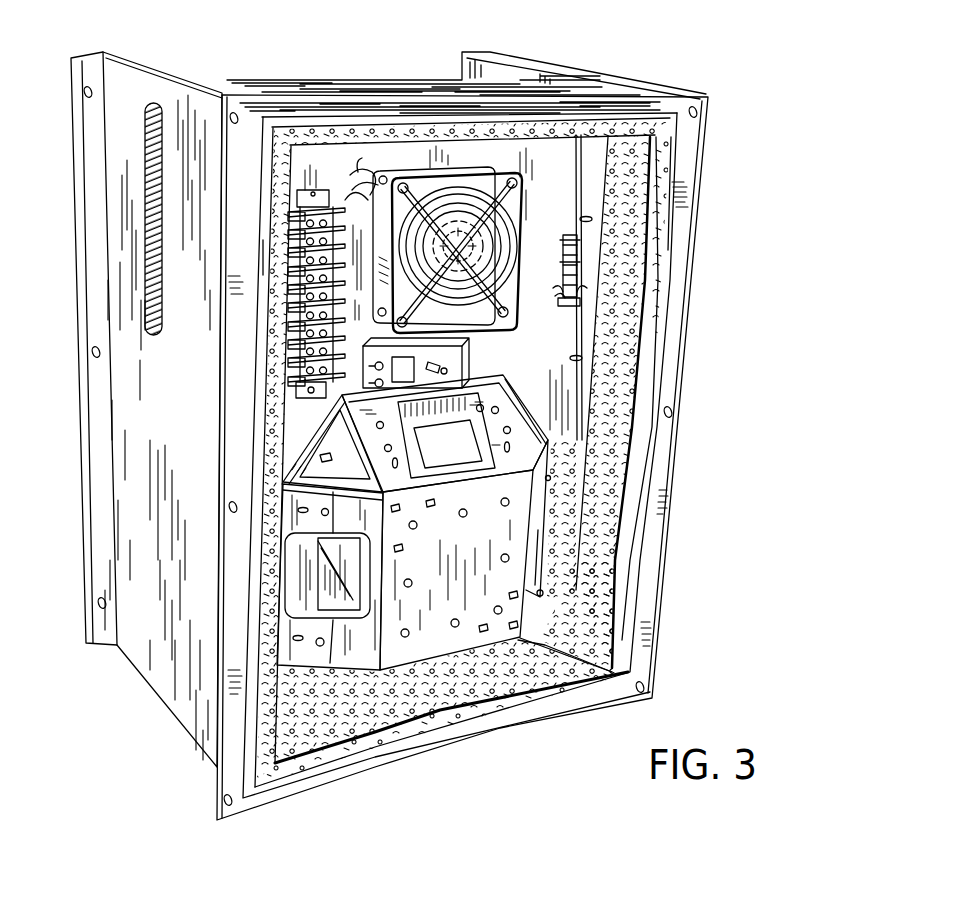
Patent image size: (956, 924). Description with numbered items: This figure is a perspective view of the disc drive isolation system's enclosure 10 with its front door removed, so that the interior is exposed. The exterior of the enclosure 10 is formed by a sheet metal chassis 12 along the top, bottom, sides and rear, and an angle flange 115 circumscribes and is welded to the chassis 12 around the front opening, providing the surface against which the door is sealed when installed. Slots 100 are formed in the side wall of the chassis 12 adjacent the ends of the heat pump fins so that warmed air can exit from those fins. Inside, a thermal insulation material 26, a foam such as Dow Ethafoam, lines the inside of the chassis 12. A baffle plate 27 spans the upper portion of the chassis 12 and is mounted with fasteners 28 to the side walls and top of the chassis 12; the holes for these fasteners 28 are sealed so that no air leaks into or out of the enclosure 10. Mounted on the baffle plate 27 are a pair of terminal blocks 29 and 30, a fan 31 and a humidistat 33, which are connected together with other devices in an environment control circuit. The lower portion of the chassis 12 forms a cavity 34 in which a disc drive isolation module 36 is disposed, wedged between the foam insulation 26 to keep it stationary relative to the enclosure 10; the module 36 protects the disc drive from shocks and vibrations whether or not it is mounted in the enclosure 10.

The enclosure 10 is at (579, 67).
The sheet metal chassis 12 is at (163, 72).
The thermal insulation material 26 is at (562, 128).
The baffle plate 27 is at (570, 322).
The fasteners 28 is at (584, 216).
The terminal block 29 is at (313, 188).
The terminal block 30 is at (582, 260).
The fan 31 is at (520, 240).
The humidistat 33 is at (463, 340).
The cavity 34 is at (526, 637).
The disc drive isolation module 36 is at (531, 399).
The slots 100 is at (150, 211).
The angle flange 115 is at (265, 257).